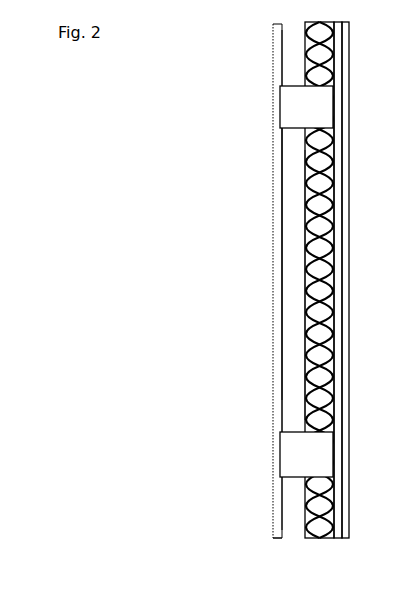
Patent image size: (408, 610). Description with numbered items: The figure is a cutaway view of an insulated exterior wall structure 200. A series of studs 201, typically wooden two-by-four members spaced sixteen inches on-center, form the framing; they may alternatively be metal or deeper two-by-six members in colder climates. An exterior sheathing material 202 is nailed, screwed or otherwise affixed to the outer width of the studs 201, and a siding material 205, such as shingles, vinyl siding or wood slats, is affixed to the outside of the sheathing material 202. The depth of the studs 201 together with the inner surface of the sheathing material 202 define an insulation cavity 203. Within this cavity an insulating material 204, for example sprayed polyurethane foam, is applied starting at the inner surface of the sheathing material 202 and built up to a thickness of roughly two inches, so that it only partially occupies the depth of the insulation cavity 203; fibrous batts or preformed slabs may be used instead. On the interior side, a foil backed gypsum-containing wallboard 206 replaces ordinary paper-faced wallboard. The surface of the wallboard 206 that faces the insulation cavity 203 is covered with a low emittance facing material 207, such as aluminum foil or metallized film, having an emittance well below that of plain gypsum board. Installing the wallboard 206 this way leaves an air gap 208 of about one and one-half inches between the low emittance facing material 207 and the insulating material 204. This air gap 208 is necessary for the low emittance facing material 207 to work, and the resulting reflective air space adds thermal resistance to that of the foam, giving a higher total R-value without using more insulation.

The insulated exterior wall structure 200 is at (245, 55).
The studs 201 is at (290, 117).
The exterior sheathing material 202 is at (335, 493).
The insulation cavity 203 is at (293, 411).
The insulating material 204 is at (299, 312).
The siding material 205 is at (347, 396).
The foil backed gypsum-containing wallboard 206 is at (265, 188).
The low emittance facing material 207 is at (282, 262).
The air gap 208 is at (289, 243).